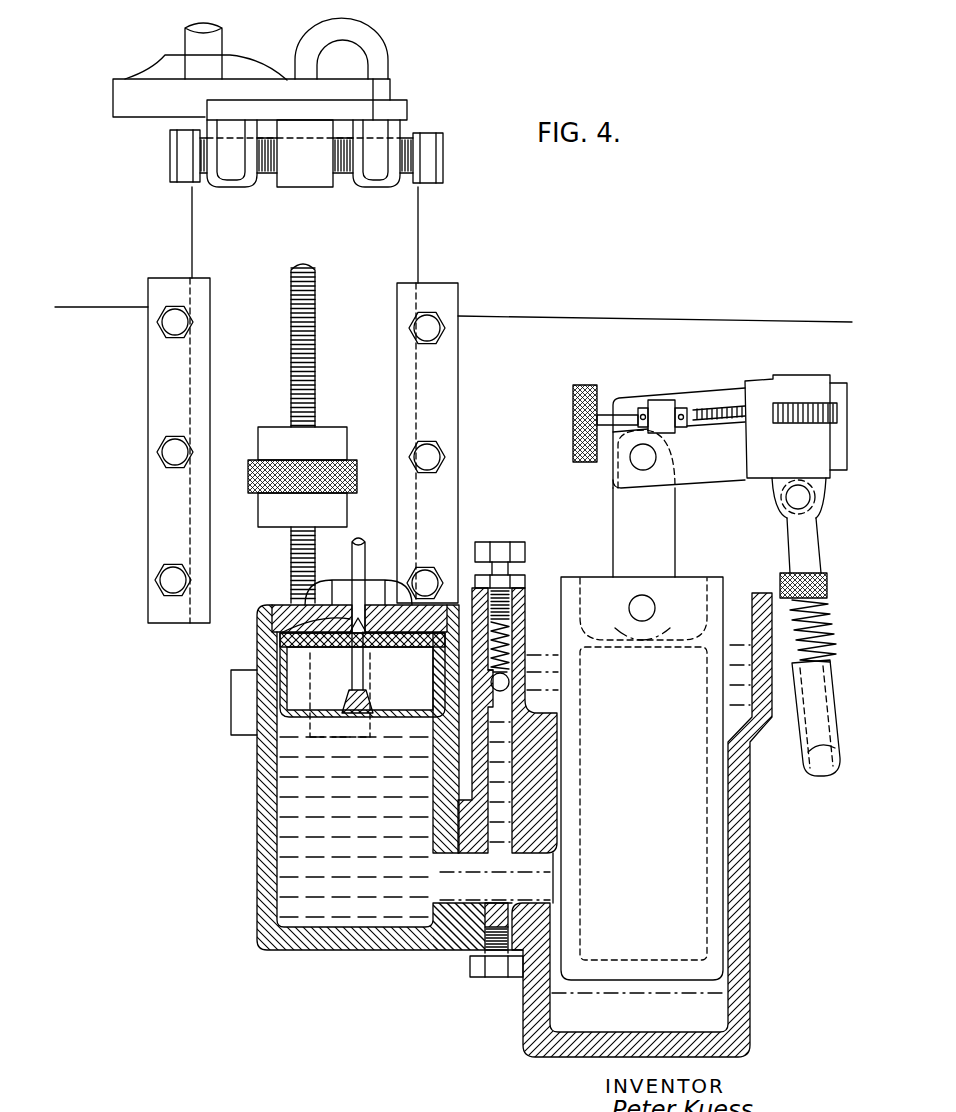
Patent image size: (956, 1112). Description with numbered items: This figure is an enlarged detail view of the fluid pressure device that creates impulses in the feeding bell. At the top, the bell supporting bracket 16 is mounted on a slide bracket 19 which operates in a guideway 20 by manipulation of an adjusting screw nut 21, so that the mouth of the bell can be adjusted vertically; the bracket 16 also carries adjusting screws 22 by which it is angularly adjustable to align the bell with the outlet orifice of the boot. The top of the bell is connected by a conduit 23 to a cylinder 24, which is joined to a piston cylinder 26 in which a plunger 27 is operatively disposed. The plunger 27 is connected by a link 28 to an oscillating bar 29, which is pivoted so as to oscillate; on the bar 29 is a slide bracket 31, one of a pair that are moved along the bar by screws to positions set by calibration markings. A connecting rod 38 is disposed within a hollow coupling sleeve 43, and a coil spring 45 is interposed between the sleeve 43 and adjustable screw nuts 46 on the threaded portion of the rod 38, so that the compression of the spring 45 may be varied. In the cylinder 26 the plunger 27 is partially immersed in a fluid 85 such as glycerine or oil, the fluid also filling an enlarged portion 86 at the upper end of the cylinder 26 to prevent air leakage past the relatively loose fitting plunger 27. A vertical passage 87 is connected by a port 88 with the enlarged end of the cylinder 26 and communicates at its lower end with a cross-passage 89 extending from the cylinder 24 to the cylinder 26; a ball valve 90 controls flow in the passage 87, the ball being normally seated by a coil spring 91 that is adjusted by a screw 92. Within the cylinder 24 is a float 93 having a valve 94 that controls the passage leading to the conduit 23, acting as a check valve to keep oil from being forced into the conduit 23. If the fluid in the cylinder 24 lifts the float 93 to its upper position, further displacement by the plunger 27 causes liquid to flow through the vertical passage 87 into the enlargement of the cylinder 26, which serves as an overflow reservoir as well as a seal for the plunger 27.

The bell supporting bracket 16 is at (150, 107).
The slide bracket 19 is at (418, 226).
The guideway 20 is at (460, 364).
The adjusting screw nut 21 is at (347, 466).
The adjusting screws 22 is at (445, 162).
The conduit 23 is at (220, 50).
The cylinder 24 is at (258, 836).
The piston cylinder 26 is at (752, 875).
The plunger 27 is at (693, 590).
The link 28 is at (617, 533).
The oscillating bar 29 is at (718, 392).
The slide bracket 31 is at (755, 479).
The connecting rod 38 is at (789, 543).
The coupling sleeve 43 is at (801, 727).
The coil spring 45 is at (819, 607).
The adjustable screw nuts 46 is at (821, 572).
The fluid 85 is at (715, 998).
The enlarged portion 86 is at (525, 612).
The vertical passage 87 is at (508, 744).
The port 88 is at (513, 672).
The cross-passage 89 is at (447, 903).
The ball valve 90 is at (505, 682).
The coil spring 91 is at (512, 636).
The screw 92 is at (500, 545).
The float 93 is at (300, 716).
The valve 94 is at (283, 629).